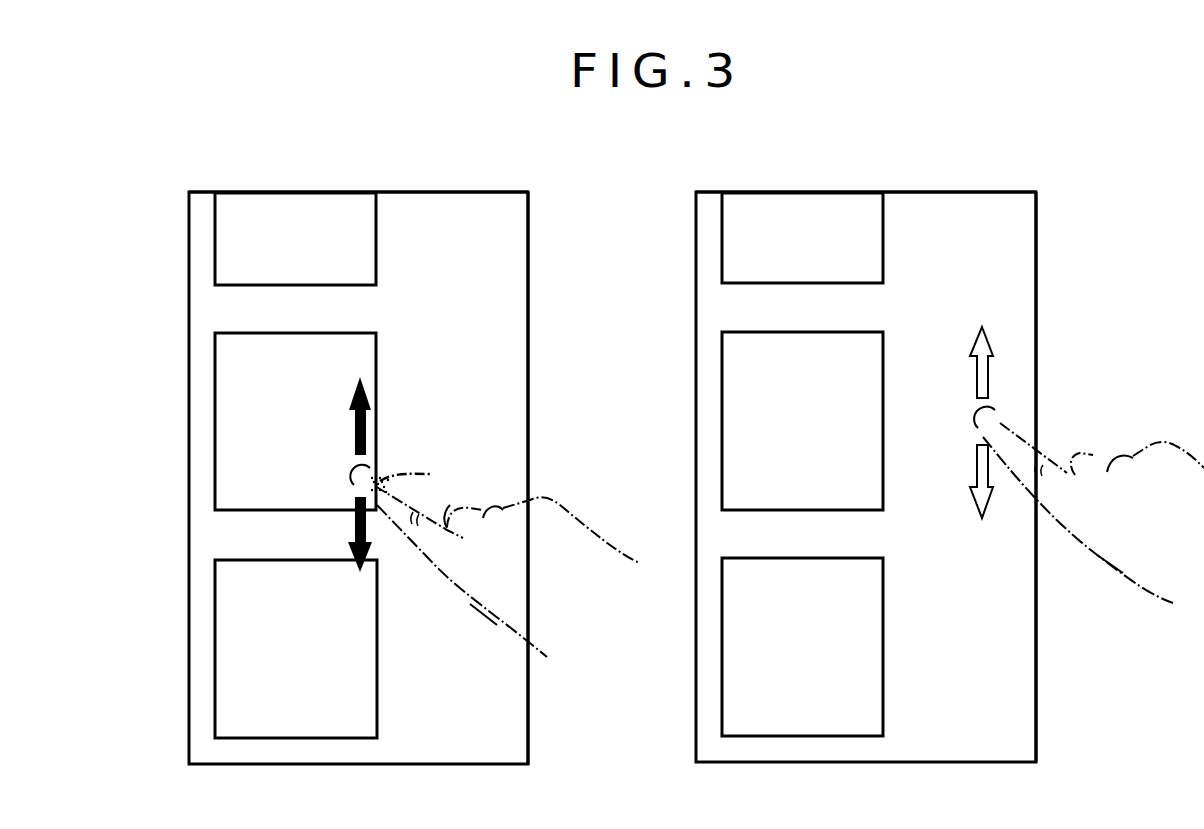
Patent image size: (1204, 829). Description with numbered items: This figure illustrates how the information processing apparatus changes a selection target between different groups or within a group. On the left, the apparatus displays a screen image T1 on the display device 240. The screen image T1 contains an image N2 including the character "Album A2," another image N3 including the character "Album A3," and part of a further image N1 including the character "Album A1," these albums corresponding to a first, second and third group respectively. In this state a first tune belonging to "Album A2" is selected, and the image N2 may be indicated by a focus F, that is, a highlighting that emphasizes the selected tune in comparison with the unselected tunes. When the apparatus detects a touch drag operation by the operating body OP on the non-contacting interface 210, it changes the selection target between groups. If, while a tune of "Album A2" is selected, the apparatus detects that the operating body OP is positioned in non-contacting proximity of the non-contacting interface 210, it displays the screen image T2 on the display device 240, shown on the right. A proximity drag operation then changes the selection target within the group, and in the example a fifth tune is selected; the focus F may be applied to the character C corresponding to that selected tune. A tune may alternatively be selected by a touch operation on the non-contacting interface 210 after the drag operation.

The non-contacting interface 210 is at (423, 197).
The display device 240 is at (473, 203).
The screen image T1 is at (522, 257).
The screen image T2 is at (1030, 257).
The image N1 is at (214, 229).
The image N2 is at (214, 388).
The image N3 is at (215, 617).
The focus F is at (268, 433).
The operating body OP is at (430, 474).
The character C is at (975, 305).